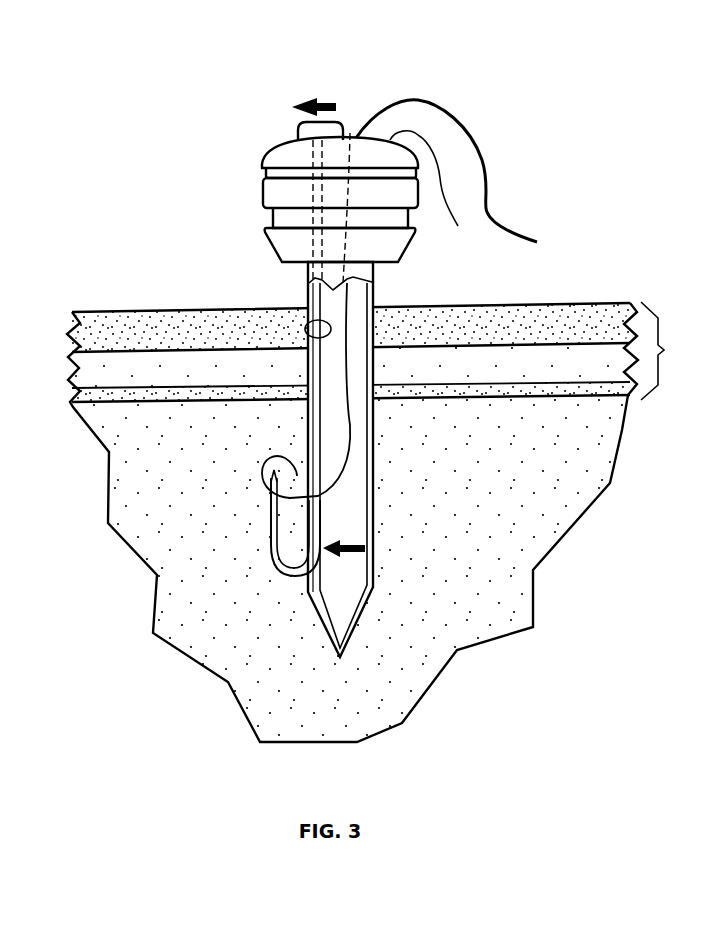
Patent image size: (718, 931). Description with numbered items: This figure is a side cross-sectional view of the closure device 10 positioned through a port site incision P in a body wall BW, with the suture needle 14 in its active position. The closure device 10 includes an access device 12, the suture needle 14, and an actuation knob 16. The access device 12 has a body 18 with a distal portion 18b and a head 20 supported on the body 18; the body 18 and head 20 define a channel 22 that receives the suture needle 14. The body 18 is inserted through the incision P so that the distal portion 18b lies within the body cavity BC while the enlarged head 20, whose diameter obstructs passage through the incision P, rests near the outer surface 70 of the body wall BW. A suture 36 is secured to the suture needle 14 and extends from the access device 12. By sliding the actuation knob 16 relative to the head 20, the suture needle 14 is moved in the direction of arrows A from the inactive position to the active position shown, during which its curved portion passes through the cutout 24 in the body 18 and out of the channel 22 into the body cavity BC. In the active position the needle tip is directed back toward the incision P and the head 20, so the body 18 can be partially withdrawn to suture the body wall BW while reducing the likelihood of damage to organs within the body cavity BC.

The closure device 10 is at (358, 402).
The access device 12 is at (257, 143).
The suture needle 14 is at (327, 519).
The actuation knob 16 is at (335, 135).
The body 18 is at (373, 455).
The distal portion 18b is at (373, 582).
The head 20 is at (282, 190).
The channel 22 is at (360, 368).
The cutout 24 is at (312, 518).
The suture 36 is at (483, 155).
The outer surface 70 is at (230, 258).
The port site incision P is at (312, 338).
The arrows A is at (321, 104).
The body wall BW is at (670, 351).
The body cavity BC is at (540, 528).